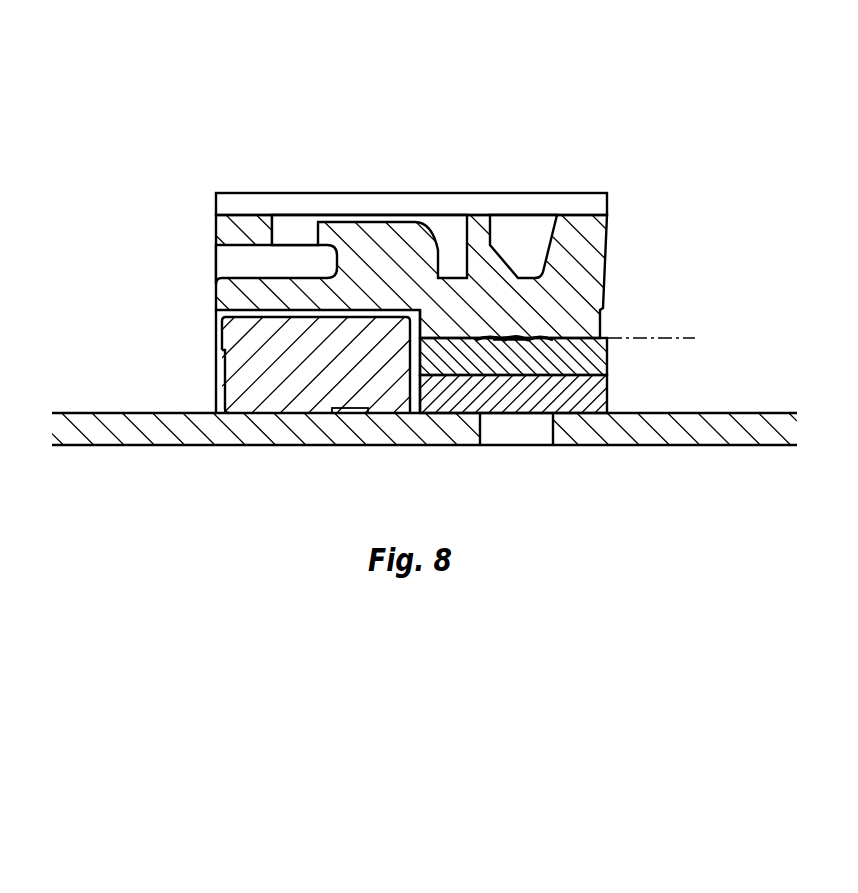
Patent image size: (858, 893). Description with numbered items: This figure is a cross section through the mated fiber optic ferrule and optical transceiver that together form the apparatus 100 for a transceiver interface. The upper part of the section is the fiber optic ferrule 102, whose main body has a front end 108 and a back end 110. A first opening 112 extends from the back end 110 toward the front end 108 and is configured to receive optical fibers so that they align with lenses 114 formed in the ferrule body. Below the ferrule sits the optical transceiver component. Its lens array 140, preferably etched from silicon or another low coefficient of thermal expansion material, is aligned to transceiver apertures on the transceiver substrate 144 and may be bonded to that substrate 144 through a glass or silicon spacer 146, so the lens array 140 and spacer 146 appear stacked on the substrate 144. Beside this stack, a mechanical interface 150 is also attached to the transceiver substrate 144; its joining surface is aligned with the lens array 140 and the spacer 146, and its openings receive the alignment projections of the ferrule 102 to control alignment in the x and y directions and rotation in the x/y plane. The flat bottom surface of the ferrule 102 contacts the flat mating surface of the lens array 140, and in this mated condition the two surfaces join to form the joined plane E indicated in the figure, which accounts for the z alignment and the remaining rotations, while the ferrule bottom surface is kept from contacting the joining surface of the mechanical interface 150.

The apparatus 100 is at (638, 133).
The fiber optic ferrule 102 is at (608, 238).
The front end 108 is at (605, 270).
The back end 110 is at (213, 235).
The first opening 112 is at (235, 265).
The lenses 114 is at (508, 262).
The lens array 140 is at (609, 357).
The transceiver substrate 144 is at (777, 413).
The glass or silicon spacer 146 is at (609, 397).
The mechanical interface 150 is at (245, 378).